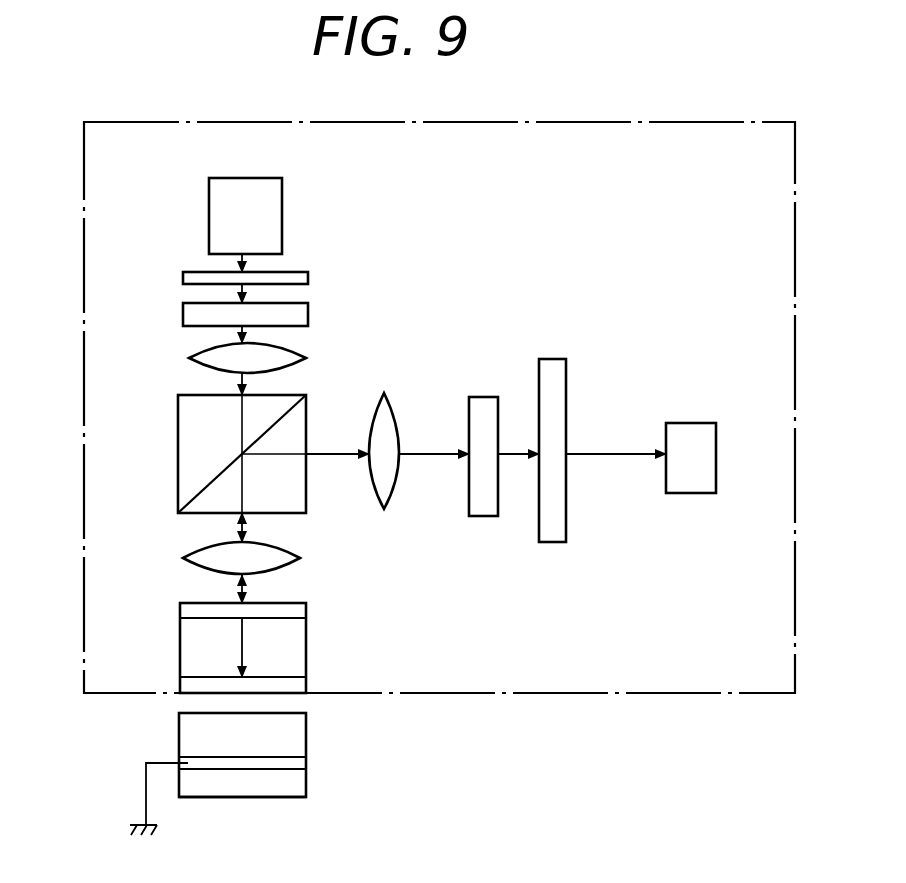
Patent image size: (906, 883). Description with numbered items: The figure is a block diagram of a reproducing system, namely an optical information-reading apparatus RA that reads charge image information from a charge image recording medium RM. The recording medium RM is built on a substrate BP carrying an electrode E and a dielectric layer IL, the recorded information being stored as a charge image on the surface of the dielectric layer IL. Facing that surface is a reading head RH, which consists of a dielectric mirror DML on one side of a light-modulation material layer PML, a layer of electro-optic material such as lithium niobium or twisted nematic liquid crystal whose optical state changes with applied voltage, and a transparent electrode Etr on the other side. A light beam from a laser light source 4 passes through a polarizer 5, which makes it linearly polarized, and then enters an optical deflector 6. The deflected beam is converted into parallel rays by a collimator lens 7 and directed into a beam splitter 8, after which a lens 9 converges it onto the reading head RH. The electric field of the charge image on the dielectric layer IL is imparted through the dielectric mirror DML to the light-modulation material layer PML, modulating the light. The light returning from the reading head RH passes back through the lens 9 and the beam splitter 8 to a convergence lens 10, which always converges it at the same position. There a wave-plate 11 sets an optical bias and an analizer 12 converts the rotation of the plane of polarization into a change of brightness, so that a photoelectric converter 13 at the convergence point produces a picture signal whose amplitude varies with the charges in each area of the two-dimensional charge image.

The laser light source 4 is at (272, 193).
The polarizer 5 is at (300, 279).
The optical deflector 6 is at (300, 313).
The collimator lens 7 is at (198, 350).
The beam splitter 8 is at (188, 408).
The lens 9 is at (200, 552).
The convergence lens 10 is at (383, 402).
The wave-plate 11 is at (487, 403).
The analizer 12 is at (557, 365).
The photoelectric converter 13 is at (704, 426).
The optical information-reading apparatus RA is at (757, 695).
The reading head RH is at (244, 628).
The transparent electrode Etr is at (298, 610).
The light-modulation material layer PML is at (298, 633).
The dielectric mirror DML is at (298, 688).
The charge image recording medium RM is at (202, 782).
The dielectric layer IL is at (298, 729).
The electrode E is at (298, 763).
The substrate BP is at (283, 790).